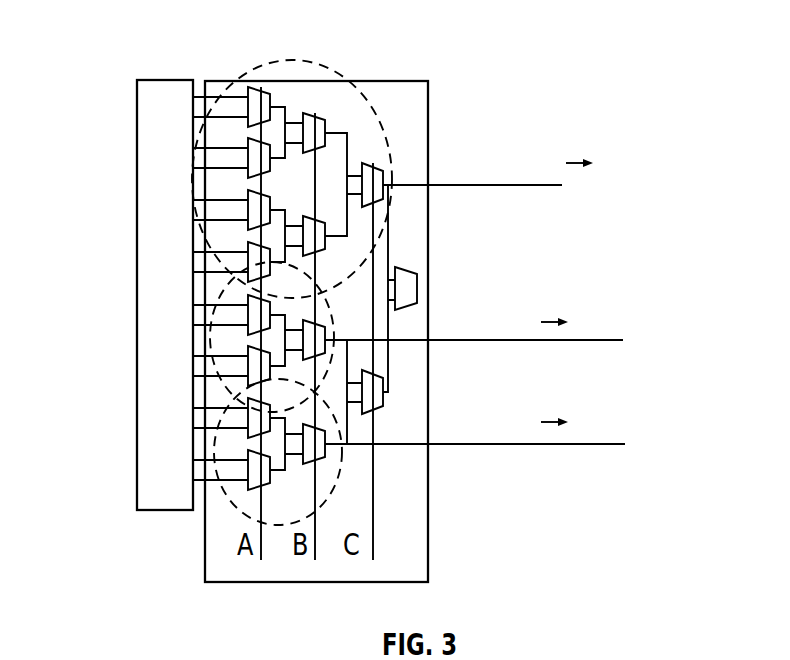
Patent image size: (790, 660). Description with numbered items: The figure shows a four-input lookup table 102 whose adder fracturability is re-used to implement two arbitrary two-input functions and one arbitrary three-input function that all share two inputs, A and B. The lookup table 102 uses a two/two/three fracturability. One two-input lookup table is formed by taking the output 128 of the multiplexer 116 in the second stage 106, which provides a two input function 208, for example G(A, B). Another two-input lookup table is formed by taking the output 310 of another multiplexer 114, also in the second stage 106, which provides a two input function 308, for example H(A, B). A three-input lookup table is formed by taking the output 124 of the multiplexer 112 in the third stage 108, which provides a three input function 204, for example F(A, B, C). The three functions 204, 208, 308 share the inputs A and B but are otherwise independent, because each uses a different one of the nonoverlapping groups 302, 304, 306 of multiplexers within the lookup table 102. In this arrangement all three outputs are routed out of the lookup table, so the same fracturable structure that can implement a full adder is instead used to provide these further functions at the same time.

The 4-LUT 102 is at (430, 105).
The second stage 106 is at (326, 73).
The third stage 108 is at (390, 248).
The multiplexer 112 is at (363, 163).
The multiplexer 114 is at (329, 306).
The multiplexer 116 is at (315, 425).
The output 124 is at (541, 222).
The output 128 is at (532, 486).
The three input function 204 is at (528, 144).
The two input function 208 is at (501, 401).
The group of multiplexers 302 is at (255, 70).
The group of multiplexers 304 is at (215, 332).
The group of multiplexers 306 is at (268, 523).
The two input function 308 is at (489, 298).
The output 310 is at (607, 370).